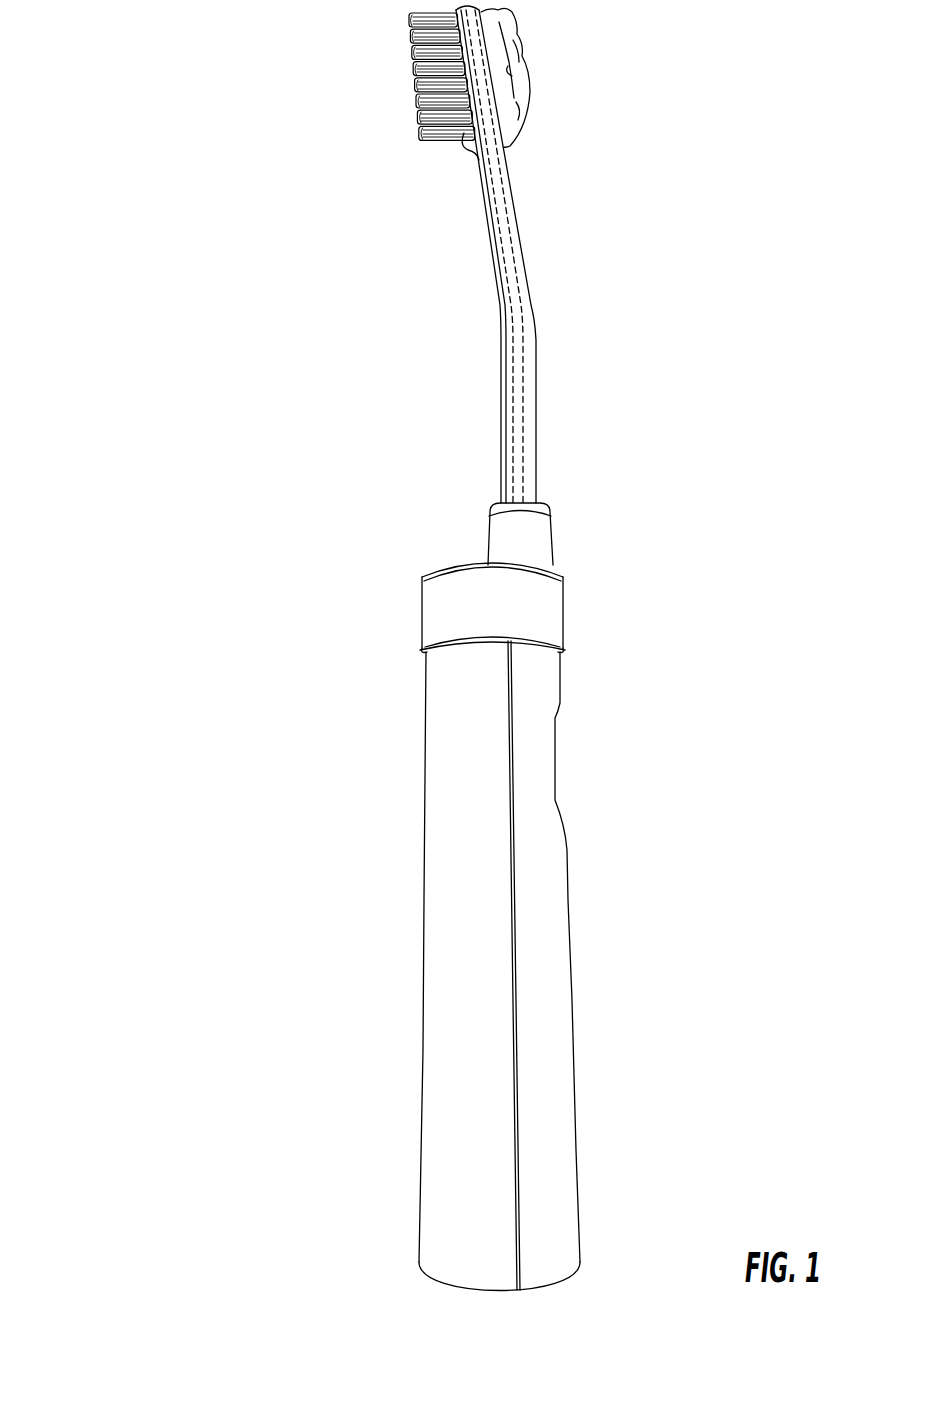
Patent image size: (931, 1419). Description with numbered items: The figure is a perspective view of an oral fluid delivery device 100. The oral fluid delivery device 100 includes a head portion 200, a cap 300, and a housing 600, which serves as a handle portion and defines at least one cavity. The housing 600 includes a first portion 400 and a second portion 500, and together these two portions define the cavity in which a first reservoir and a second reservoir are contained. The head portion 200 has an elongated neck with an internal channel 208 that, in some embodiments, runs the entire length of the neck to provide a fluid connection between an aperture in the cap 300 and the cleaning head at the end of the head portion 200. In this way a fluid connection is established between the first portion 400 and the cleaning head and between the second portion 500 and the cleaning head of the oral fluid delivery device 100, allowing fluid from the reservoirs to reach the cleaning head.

The oral fluid delivery device 100 is at (133, 94).
The head portion 200 is at (573, 266).
The internal channel 208 is at (537, 440).
The cap 300 is at (602, 590).
The first portion 400 is at (610, 894).
The second portion 500 is at (401, 900).
The housing 600 is at (522, 1311).